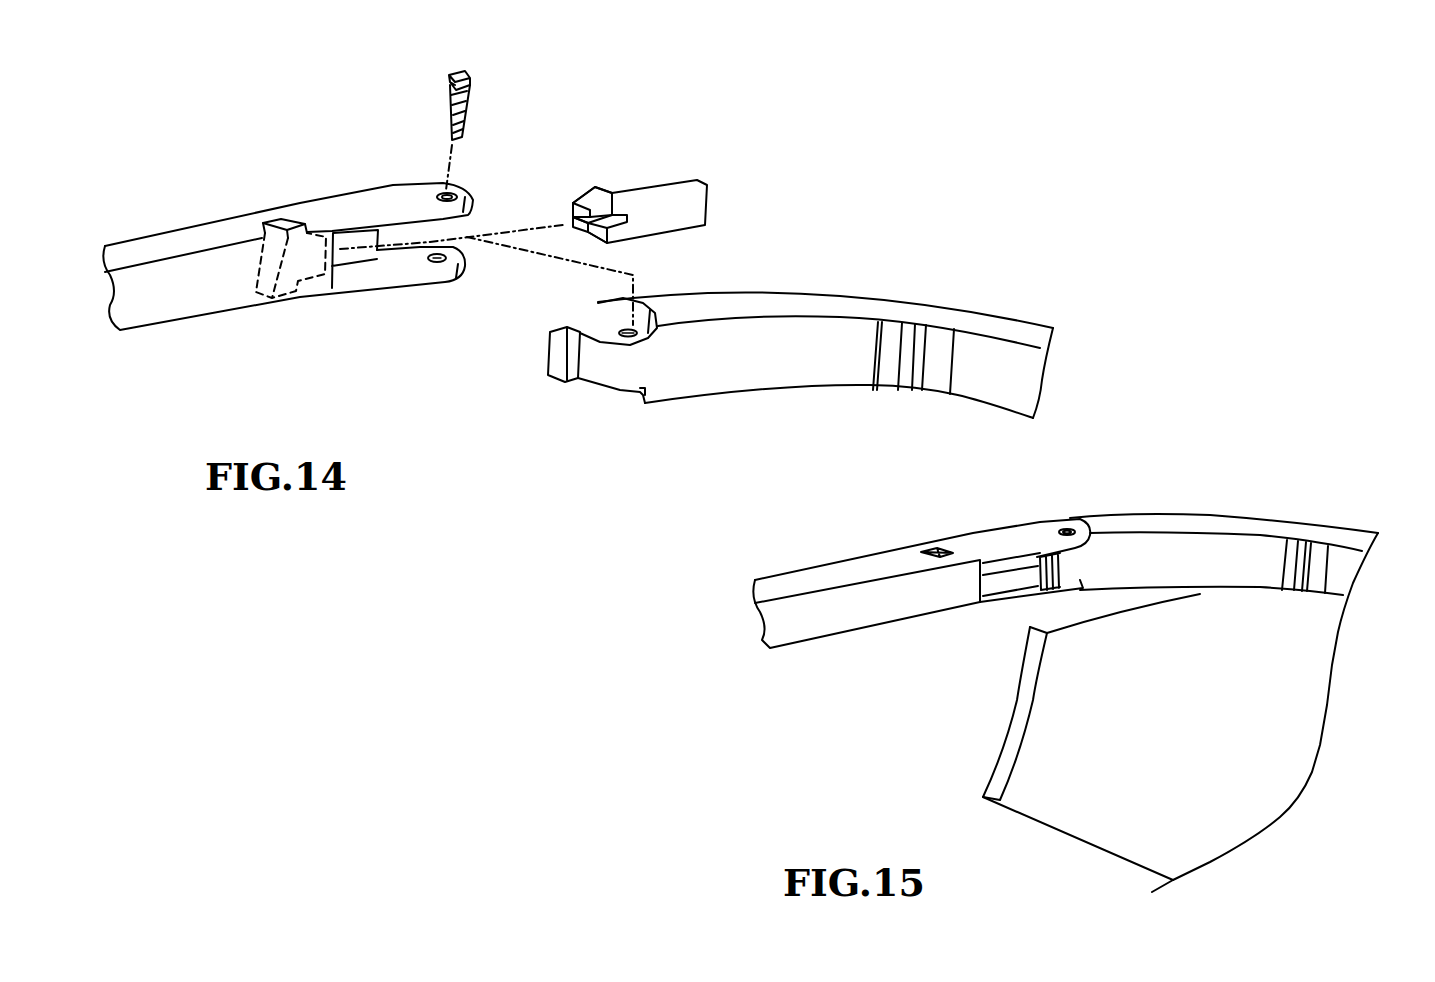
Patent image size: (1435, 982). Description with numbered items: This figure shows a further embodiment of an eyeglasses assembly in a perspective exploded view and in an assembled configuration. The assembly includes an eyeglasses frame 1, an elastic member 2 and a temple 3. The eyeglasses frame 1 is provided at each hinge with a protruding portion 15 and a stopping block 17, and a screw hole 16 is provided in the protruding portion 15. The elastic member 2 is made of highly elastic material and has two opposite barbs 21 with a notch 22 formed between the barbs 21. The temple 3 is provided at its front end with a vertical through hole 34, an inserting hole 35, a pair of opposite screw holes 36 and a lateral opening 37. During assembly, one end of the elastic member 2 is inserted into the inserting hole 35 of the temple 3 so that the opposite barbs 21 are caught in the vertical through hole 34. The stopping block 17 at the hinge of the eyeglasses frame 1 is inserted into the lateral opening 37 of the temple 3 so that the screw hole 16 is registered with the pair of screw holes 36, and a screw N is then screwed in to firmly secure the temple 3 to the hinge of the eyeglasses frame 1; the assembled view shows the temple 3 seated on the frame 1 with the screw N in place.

In FIG. 14, the eyeglasses frame 1 is at (893, 290).
In FIG. 15, the eyeglasses frame 1 is at (1180, 555).
In FIG. 14, the elastic member 2 is at (643, 182).
In FIG. 15, the elastic member 2 is at (1007, 577).
In FIG. 14, the temple 3 is at (233, 205).
In FIG. 15, the temple 3 is at (863, 605).
In FIG. 14, the protruding portion 15 is at (613, 370).
In FIG. 15, the protruding portion 15 is at (1040, 565).
In FIG. 14, the screw hole 16 is at (626, 328).
In FIG. 14, the stopping block 17 is at (555, 355).
In FIG. 14, the barb 21 is at (584, 200).
In FIG. 14, the notch 22 is at (570, 225).
In FIG. 14, the vertical through hole 34 is at (283, 222).
In FIG. 15, the vertical through hole 34 is at (933, 550).
In FIG. 14, the inserting hole 35 is at (313, 270).
In FIG. 14, the screw hole 36 is at (440, 192).
In FIG. 14, the lateral opening 37 is at (388, 238).
In FIG. 14, the screw N is at (468, 108).
In FIG. 15, the screw N is at (1065, 528).